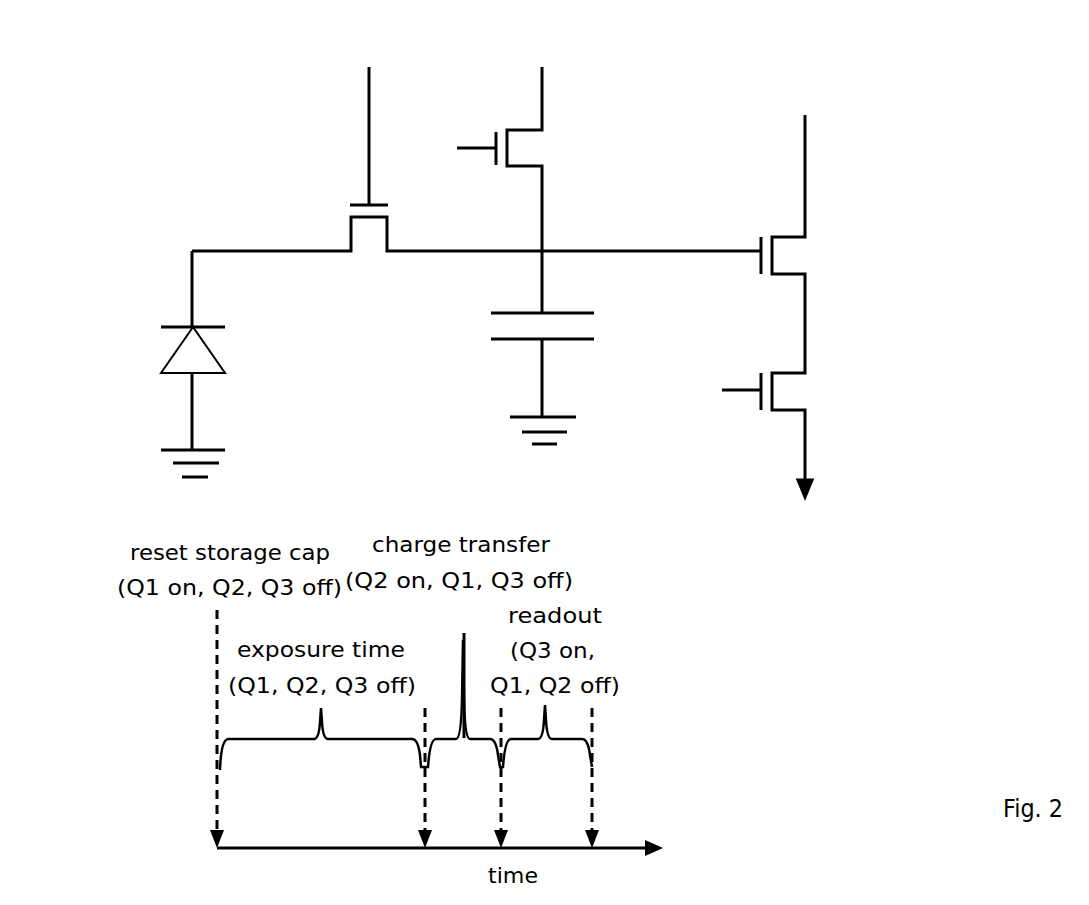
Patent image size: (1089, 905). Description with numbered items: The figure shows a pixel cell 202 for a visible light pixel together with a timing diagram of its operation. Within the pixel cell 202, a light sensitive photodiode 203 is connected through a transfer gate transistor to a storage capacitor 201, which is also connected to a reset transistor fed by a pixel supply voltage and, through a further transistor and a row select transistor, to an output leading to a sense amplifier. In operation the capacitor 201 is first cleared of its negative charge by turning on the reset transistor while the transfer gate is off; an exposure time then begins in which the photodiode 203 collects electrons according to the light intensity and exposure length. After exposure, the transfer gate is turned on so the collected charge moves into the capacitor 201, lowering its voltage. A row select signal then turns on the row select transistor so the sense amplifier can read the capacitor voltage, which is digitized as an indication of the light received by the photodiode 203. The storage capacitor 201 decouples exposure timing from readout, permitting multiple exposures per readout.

The storage capacitor 201 is at (490, 327).
The pixel cell 202 is at (95, 79).
The photodiode 203 is at (242, 371).